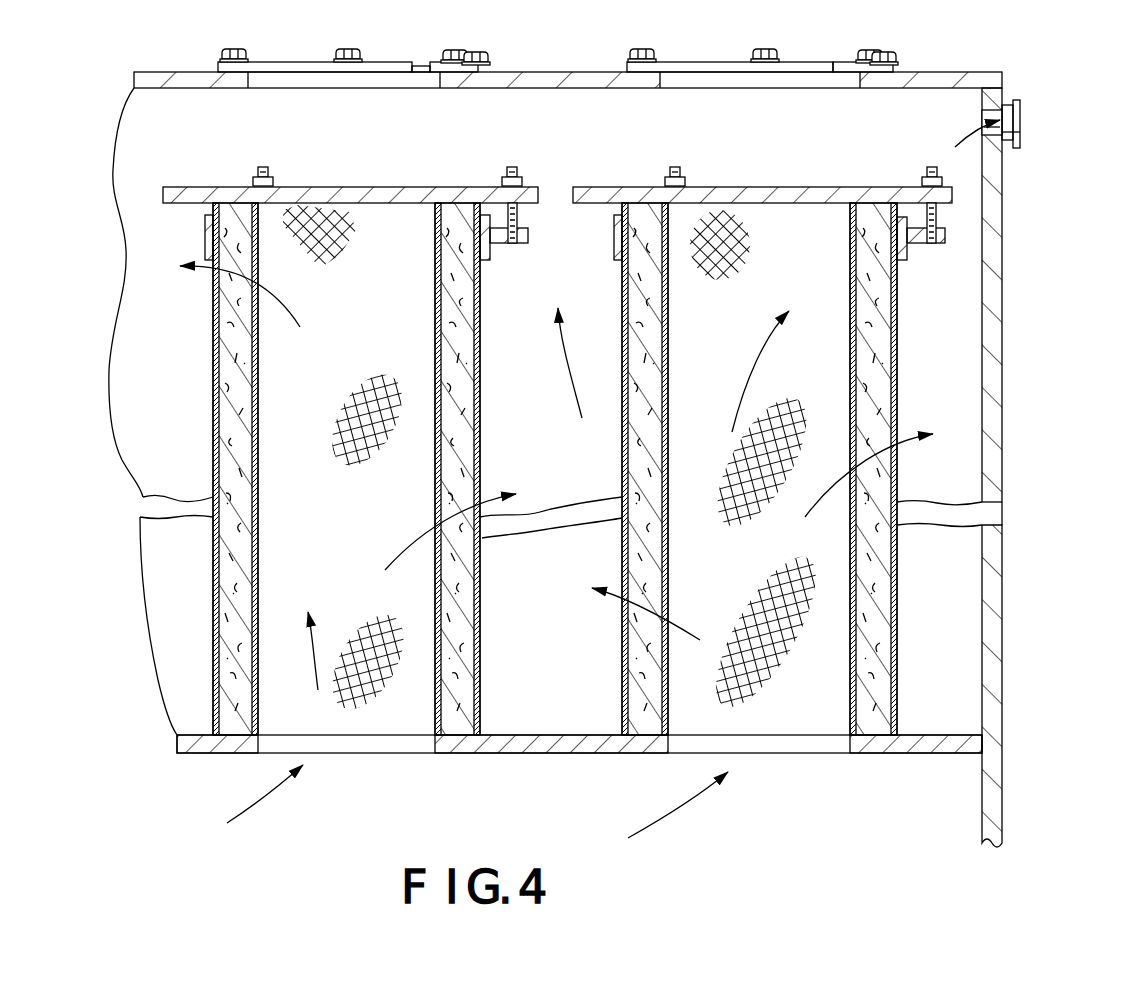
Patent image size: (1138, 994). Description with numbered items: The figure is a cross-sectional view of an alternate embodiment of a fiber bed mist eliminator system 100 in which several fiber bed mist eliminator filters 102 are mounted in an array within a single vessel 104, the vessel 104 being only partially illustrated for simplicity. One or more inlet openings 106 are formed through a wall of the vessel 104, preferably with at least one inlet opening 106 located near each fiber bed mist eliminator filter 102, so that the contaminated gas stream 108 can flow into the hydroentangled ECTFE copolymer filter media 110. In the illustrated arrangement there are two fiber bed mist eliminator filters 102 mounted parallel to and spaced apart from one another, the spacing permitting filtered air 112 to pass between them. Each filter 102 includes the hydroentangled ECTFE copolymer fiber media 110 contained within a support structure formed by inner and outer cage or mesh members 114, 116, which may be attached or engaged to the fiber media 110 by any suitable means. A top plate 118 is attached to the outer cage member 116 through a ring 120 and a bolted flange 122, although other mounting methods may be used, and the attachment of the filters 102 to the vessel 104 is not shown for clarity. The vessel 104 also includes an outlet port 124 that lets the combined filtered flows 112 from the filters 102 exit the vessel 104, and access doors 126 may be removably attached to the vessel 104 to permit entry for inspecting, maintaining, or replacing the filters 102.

The fiber bed mist eliminator system 100 is at (1054, 347).
The fiber bed mist eliminator filter 102 is at (360, 182).
The vessel 104 is at (1003, 228).
The inlet opening 106 is at (406, 755).
The contaminated gas stream 108 is at (268, 800).
The hydroentangled ECTFE copolymer filter media 110 is at (256, 570).
The filtered air 112 is at (557, 350).
The inner cage member 114 is at (258, 494).
The outer cage member 116 is at (213, 466).
The top plate 118 is at (178, 187).
The ring 120 is at (492, 252).
The bolted flange 122 is at (532, 219).
The outlet port 124 is at (1012, 100).
The access door 126 is at (416, 70).